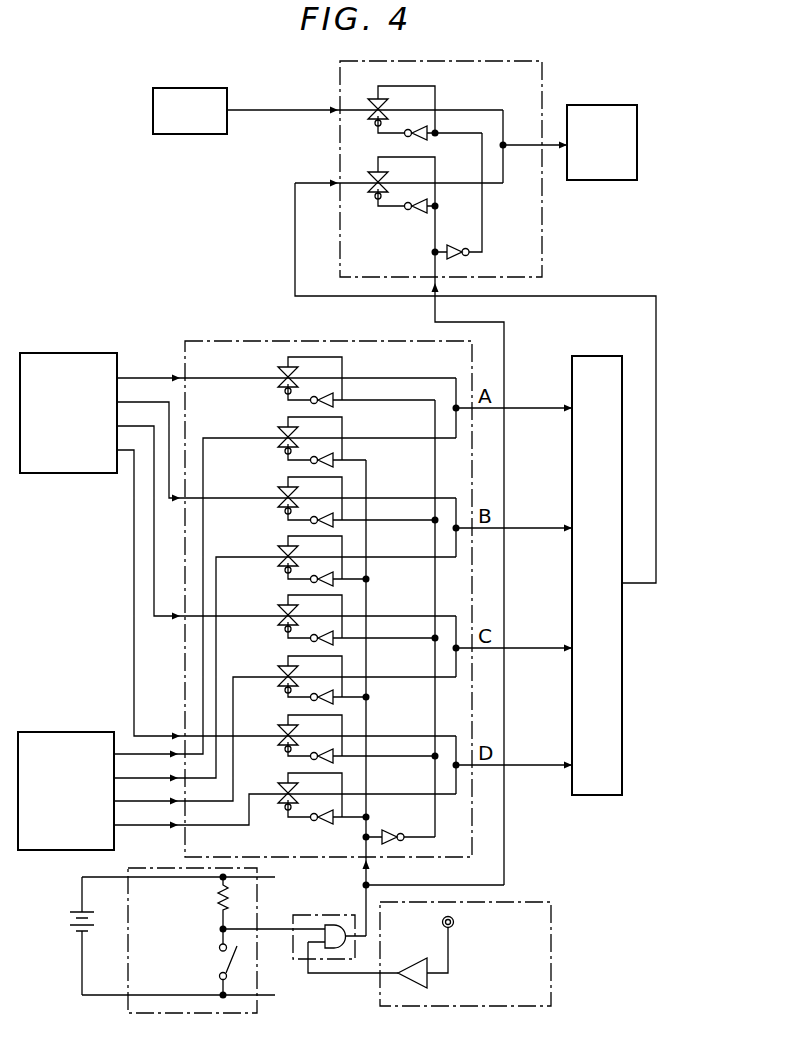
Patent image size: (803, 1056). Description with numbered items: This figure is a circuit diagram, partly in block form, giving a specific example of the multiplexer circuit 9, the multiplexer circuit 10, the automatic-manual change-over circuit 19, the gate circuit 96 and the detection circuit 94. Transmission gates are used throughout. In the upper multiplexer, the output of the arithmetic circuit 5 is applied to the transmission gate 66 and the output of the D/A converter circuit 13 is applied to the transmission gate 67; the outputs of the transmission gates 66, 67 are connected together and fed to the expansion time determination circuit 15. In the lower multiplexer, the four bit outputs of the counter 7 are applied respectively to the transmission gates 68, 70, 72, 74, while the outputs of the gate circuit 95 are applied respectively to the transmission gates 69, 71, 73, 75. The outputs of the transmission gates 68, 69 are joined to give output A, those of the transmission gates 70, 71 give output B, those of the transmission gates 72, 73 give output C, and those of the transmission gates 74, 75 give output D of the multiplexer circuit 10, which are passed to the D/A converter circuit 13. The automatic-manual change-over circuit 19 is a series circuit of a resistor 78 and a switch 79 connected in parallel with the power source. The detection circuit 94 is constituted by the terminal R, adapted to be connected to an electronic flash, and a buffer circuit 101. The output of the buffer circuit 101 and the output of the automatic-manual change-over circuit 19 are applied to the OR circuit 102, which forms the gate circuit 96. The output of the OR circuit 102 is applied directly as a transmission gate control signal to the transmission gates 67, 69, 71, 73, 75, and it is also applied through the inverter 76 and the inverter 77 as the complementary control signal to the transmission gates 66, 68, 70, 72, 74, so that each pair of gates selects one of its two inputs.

The arithmetic circuit 5 is at (213, 88).
The counter 7 is at (76, 353).
The multiplexer circuit 9 is at (542, 86).
The multiplexer circuit 10 is at (272, 330).
The D/A converter circuit 13 is at (622, 672).
The expansion time determination circuit 15 is at (616, 180).
The automatic-manual change-over circuit 19 is at (183, 950).
The transmission gate 66 is at (370, 100).
The transmission gate 67 is at (370, 172).
The transmission gate 68 is at (277, 385).
The transmission gate 69 is at (277, 445).
The transmission gate 70 is at (277, 504).
The transmission gate 71 is at (277, 563).
The transmission gate 72 is at (279, 623).
The transmission gate 73 is at (279, 683).
The transmission gate 74 is at (279, 742).
The transmission gate 75 is at (282, 804).
The inverter 76 is at (450, 243).
The inverter 77 is at (390, 834).
The resistor 78 is at (218, 902).
The switch 79 is at (240, 956).
The detection circuit 94 is at (489, 954).
The gate circuit 95 is at (55, 732).
The gate circuit 96 is at (291, 920).
The buffer circuit 101 is at (416, 962).
The OR circuit 102 is at (342, 916).